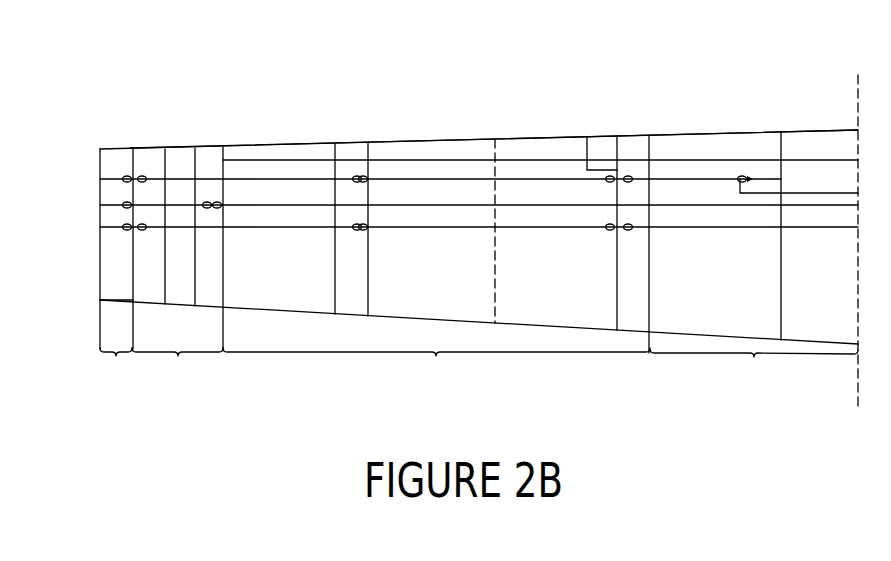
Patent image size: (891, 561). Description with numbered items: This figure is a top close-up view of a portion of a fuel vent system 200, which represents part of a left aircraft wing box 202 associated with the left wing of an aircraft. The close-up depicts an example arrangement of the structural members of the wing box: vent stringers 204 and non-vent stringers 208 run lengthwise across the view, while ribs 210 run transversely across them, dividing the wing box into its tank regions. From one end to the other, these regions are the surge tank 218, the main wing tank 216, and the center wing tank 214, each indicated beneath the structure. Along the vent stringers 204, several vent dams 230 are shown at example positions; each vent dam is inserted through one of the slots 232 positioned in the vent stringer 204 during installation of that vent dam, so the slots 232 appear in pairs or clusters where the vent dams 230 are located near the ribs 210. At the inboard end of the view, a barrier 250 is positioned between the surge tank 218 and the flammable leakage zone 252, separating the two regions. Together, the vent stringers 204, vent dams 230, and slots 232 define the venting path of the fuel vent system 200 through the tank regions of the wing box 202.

The fuel vent system 200 is at (604, 100).
The left aircraft wing box 202 is at (524, 124).
The vent stringers 204 is at (273, 207).
The non-vent stringers 208 is at (698, 160).
The ribs 210 is at (165, 288).
The center wing tank 214 is at (754, 373).
The main wing tank 216 is at (436, 373).
The surge tank 218 is at (177, 373).
The vent dams 230 is at (131, 228).
The slots 232 is at (126, 203).
The barrier 250 is at (127, 230).
The flammable leakage zone 252 is at (118, 373).